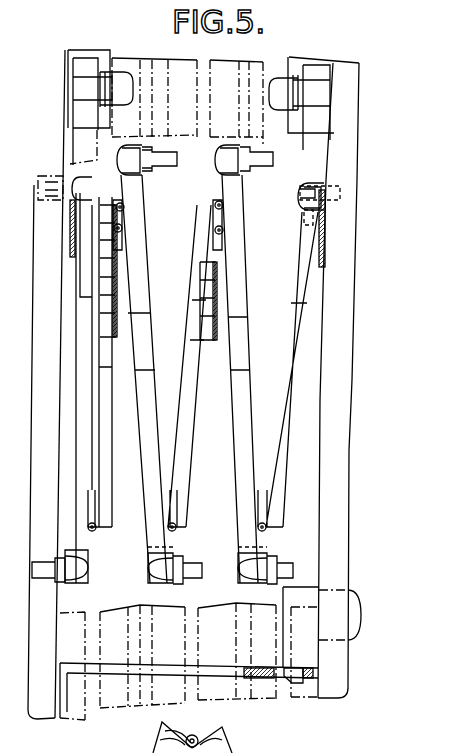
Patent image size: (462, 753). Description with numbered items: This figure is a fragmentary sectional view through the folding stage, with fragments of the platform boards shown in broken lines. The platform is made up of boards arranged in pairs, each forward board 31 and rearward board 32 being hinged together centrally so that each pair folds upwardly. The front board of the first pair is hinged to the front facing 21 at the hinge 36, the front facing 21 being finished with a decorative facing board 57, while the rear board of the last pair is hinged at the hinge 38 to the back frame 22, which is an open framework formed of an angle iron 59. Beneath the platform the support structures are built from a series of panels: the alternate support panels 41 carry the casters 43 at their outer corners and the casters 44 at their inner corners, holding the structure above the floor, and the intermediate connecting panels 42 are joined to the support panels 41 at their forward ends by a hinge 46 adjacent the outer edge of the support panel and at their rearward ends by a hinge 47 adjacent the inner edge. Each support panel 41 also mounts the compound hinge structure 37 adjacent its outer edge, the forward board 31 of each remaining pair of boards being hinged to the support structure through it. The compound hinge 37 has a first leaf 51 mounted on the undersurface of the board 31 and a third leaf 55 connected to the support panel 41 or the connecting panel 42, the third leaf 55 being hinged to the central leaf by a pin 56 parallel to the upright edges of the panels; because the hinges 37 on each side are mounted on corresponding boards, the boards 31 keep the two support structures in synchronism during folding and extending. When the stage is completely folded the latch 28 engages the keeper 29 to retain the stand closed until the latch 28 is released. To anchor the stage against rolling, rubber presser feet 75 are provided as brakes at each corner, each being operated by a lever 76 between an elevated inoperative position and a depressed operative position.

The front facing 21 is at (352, 362).
The back frame 22 is at (36, 207).
The latch 28 is at (310, 660).
The keeper 29 is at (284, 682).
The forward board 31 is at (127, 55).
The rearward board 32 is at (95, 40).
The hinge 36 is at (326, 256).
The hinge structure 37 is at (115, 270).
The hinge 38 is at (70, 222).
The support panel 41 is at (80, 467).
The connecting panel 42 is at (112, 460).
The caster 43 is at (43, 177).
The caster 44 is at (32, 574).
The hinge 46 is at (118, 178).
The hinge 47 is at (96, 530).
The first leaf 51 is at (115, 322).
The third leaf 55 is at (122, 230).
The pin 56 is at (124, 208).
The facing board 57 is at (348, 413).
The angle iron 59 is at (43, 287).
The rubber presser foot 75 is at (80, 115).
The lever 76 is at (123, 100).